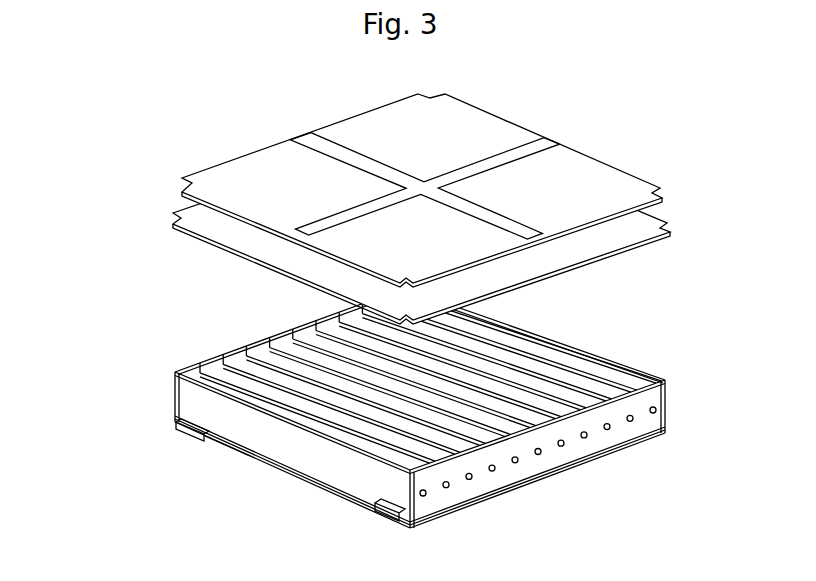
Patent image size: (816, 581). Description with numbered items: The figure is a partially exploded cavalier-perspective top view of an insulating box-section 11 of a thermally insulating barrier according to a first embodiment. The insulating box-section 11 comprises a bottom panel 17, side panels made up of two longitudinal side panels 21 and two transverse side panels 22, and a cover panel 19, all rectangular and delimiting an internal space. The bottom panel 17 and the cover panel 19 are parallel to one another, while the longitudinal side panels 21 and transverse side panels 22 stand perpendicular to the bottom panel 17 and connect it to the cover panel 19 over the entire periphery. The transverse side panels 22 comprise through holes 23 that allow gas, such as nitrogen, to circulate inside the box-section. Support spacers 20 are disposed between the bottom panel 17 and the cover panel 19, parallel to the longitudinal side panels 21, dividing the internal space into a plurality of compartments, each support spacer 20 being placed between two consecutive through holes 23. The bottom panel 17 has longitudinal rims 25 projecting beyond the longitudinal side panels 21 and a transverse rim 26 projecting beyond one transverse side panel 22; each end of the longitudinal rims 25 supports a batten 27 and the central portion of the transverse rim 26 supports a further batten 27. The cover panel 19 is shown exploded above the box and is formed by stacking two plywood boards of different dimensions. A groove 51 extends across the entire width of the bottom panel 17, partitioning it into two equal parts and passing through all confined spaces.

The insulating box-section 11 is at (150, 270).
The bottom panel 17 is at (208, 441).
The cover panel 19 is at (672, 212).
The support spacers 20 is at (201, 362).
The longitudinal side panels 21 is at (186, 390).
The transverse side panels 22 is at (655, 400).
The through holes 23 is at (423, 497).
The longitudinal rims 25 is at (250, 456).
The transverse rim 26 is at (666, 438).
The battens 27 is at (180, 428).
The groove 51 is at (300, 478).